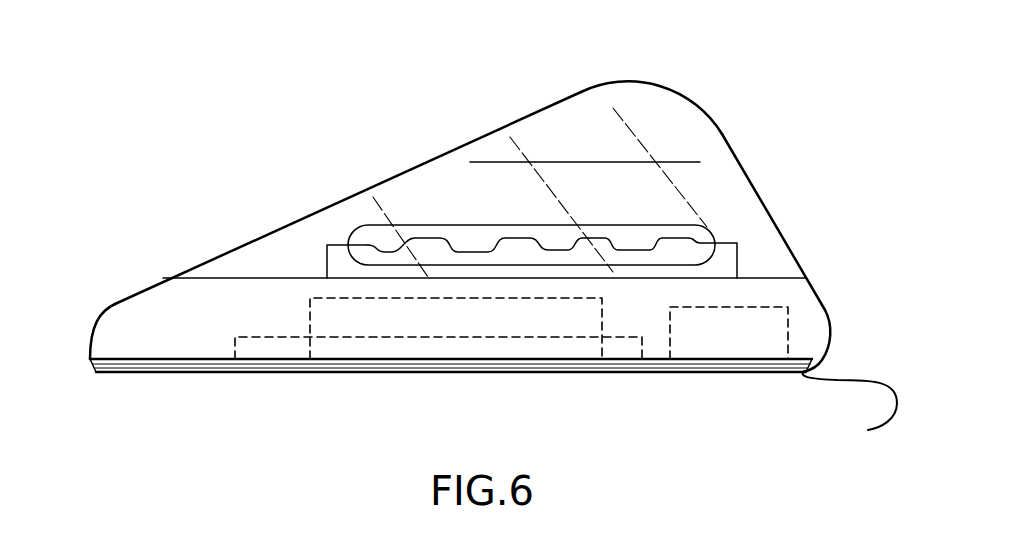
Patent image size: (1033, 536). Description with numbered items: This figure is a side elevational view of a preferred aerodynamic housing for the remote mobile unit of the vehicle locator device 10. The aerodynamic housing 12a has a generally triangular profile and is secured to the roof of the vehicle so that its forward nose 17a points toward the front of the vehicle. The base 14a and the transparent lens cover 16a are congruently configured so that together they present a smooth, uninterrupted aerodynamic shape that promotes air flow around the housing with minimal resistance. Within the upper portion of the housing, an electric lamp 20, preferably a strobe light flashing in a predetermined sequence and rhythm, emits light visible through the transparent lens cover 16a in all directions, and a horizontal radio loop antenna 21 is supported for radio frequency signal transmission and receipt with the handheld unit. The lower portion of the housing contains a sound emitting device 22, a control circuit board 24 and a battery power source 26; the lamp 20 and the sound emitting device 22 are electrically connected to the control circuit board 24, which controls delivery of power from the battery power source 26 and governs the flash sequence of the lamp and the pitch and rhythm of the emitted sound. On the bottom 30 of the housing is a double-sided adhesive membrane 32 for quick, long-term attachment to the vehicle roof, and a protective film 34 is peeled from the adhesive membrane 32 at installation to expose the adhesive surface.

The vehicle locator device 10 is at (483, 247).
The aerodynamic housing 12a is at (783, 221).
The base 14a is at (823, 323).
The transparent lens cover 16a is at (577, 92).
The forward nose 17a is at (106, 306).
The electric lamp 20 is at (663, 225).
The horizontal radio loop antenna 21 is at (628, 162).
The sound emitting device 22 is at (328, 318).
The control circuit board 24 is at (630, 347).
The battery power source 26 is at (760, 322).
The bottom 30 is at (850, 407).
The double-sided adhesive membrane 32 is at (215, 362).
The protective film 34 is at (400, 373).